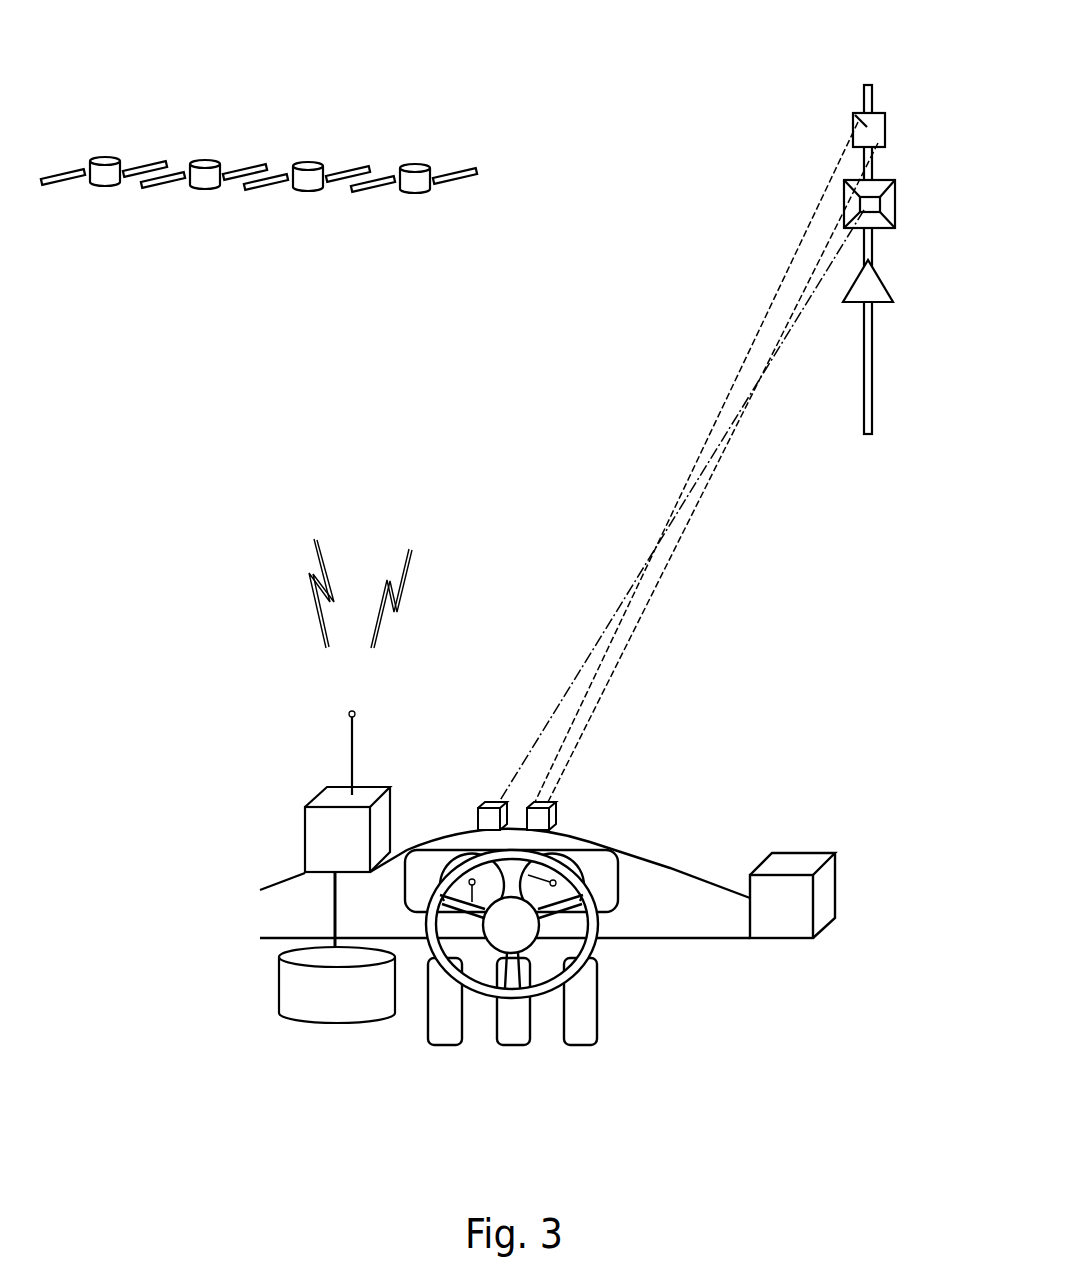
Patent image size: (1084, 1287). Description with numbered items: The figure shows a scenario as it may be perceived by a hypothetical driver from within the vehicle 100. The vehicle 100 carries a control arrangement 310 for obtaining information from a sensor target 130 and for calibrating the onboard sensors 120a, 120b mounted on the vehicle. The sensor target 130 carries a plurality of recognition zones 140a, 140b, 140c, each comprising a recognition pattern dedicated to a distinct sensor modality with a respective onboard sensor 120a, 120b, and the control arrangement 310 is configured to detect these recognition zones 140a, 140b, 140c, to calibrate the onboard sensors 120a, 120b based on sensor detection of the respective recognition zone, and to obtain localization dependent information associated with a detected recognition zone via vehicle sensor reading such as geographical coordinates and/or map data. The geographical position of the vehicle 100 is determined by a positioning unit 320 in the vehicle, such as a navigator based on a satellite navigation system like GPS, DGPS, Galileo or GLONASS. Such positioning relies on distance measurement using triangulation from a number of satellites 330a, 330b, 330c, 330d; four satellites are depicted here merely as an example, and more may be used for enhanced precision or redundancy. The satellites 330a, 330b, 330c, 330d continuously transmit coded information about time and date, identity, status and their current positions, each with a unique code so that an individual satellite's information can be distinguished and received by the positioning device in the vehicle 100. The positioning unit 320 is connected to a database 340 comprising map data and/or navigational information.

The vehicle 100 is at (692, 923).
The onboard sensor 120a is at (540, 817).
The onboard sensor 120b is at (495, 800).
The sensor target 130 is at (866, 82).
The recognition zone 140a is at (853, 114).
The recognition zone 140b is at (889, 180).
The recognition zone 140c is at (872, 282).
The control arrangement 310 is at (798, 858).
The positioning unit 320 is at (373, 797).
The satellite 330a is at (100, 158).
The satellite 330b is at (204, 162).
The satellite 330c is at (308, 164).
The satellite 330d is at (415, 166).
The database 340 is at (352, 1010).